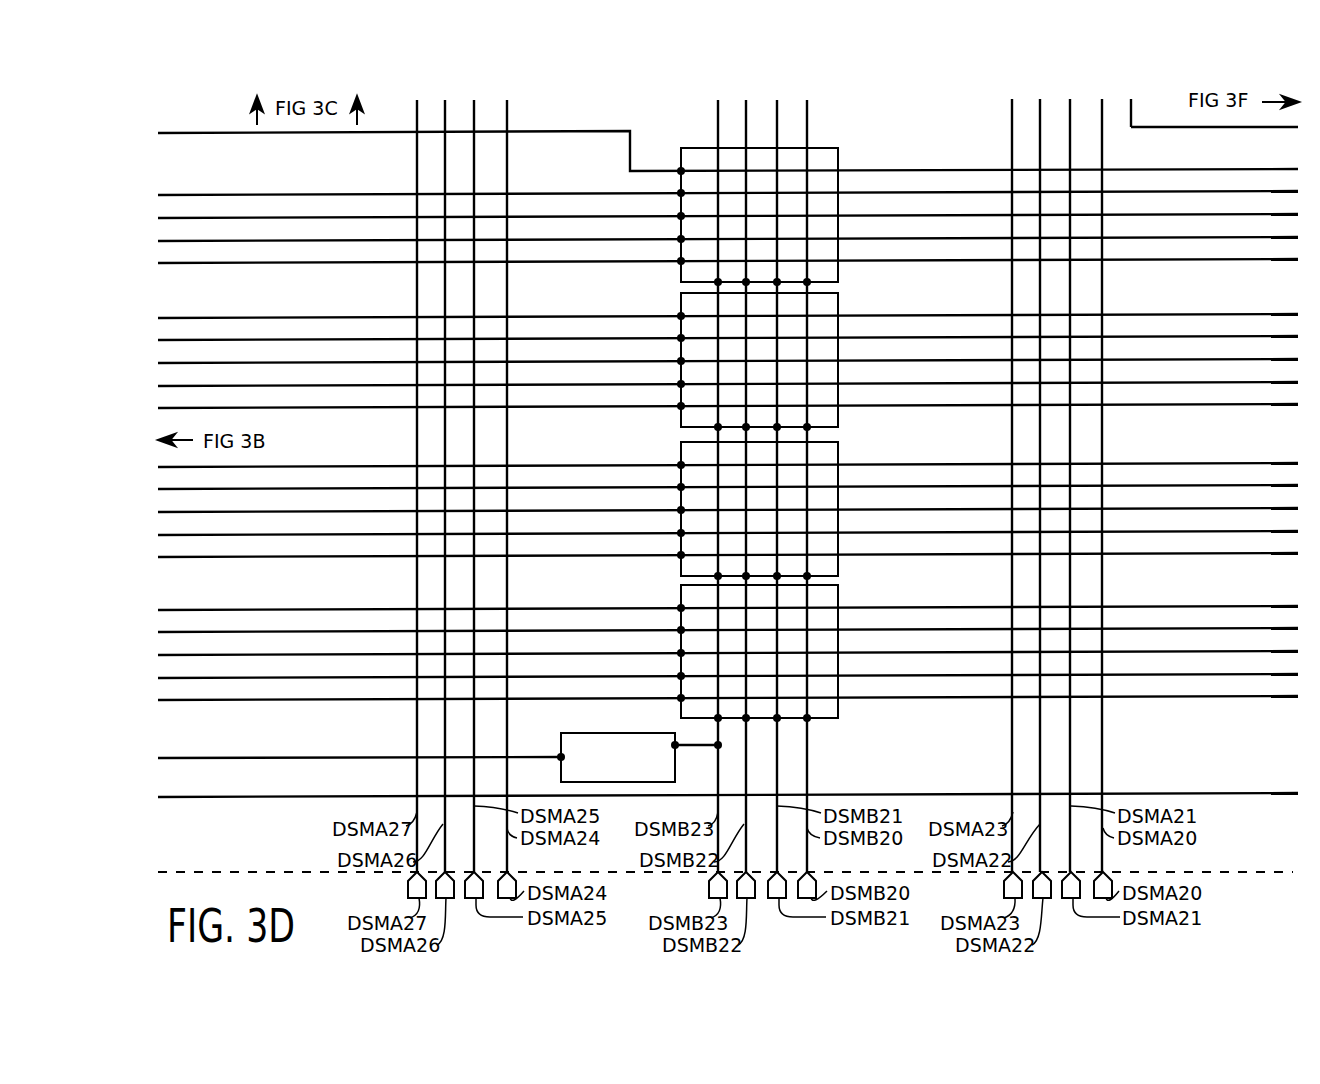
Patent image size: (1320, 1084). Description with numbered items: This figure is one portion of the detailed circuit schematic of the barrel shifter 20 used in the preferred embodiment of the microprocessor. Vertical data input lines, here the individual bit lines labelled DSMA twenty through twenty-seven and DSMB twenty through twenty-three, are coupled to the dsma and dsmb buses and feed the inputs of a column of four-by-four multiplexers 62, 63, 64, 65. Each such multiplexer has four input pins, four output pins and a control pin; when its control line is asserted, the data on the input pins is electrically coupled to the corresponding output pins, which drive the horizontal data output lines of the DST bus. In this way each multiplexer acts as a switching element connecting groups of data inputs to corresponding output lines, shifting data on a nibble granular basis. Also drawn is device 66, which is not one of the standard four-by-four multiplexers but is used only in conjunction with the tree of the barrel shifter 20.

The multiplexer 62 is at (838, 157).
The multiplexer 63 is at (838, 302).
The multiplexer 64 is at (838, 451).
The multiplexer 65 is at (848, 585).
The device used with tree 66 is at (562, 733).
The barrel shifter 20 is at (1274, 872).